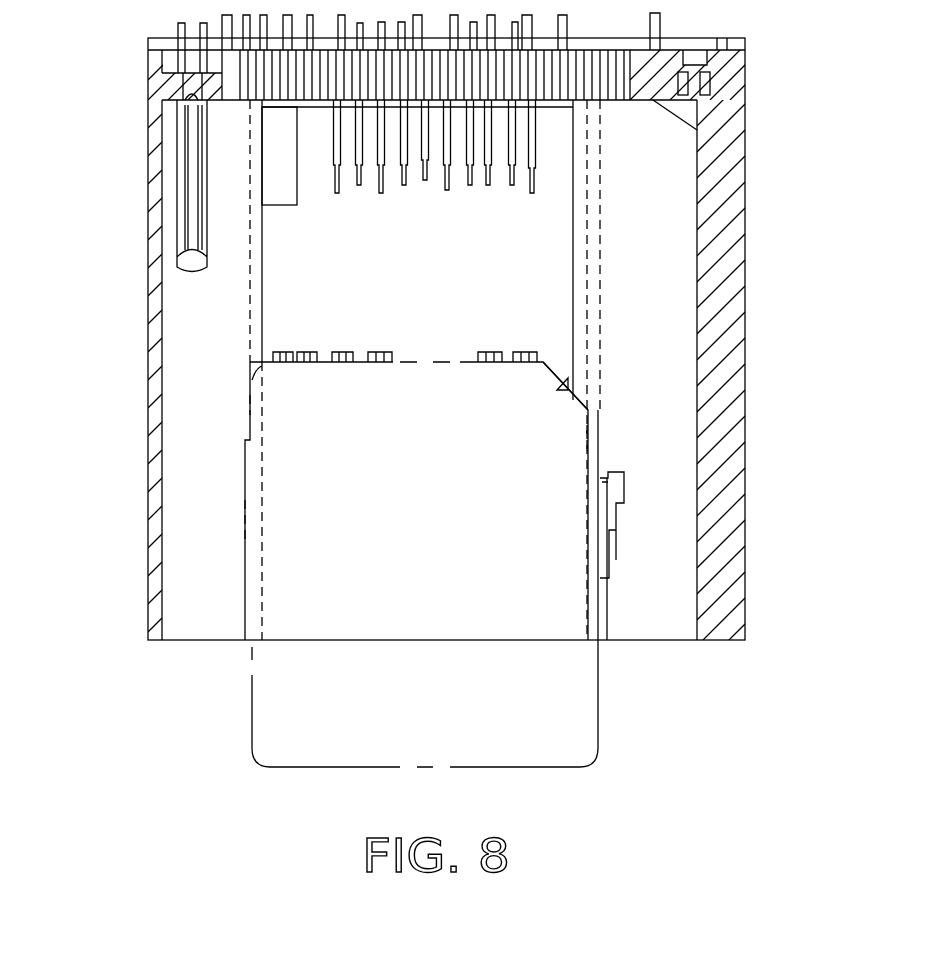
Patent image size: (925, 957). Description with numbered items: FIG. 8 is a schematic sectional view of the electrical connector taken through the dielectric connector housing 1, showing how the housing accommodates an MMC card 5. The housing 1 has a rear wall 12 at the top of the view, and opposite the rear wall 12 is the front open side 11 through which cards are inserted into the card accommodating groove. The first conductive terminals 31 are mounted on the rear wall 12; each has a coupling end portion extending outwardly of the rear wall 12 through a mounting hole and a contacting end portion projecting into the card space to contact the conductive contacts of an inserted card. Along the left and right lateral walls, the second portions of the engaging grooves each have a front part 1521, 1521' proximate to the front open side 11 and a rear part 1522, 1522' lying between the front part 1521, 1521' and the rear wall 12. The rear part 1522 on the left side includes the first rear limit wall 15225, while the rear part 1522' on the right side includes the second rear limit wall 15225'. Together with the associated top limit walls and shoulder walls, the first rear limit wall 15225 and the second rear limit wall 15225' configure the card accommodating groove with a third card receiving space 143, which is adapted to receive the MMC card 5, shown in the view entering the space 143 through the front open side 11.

The dielectric connector housing 1 is at (745, 292).
The rear wall 12 is at (722, 73).
The first conductive terminals 31 is at (532, 138).
The third card receiving space 143 is at (317, 462).
The first rear limit wall 15225 is at (138, 477).
The rear part of the second portion of the engaging groove in the left lateral wall 1522 is at (137, 386).
The front part of the second portion of the engaging groove in the left lateral wall 1521 is at (140, 515).
The second rear limit wall 15225' is at (706, 386).
The rear part of the second portion of the engaging groove in the right lateral wall 1522' is at (719, 428).
The front part of the second portion of the engaging groove in the right lateral wal 1521' is at (725, 556).
The front open side 11 is at (598, 642).
The MMC card 5 is at (590, 727).